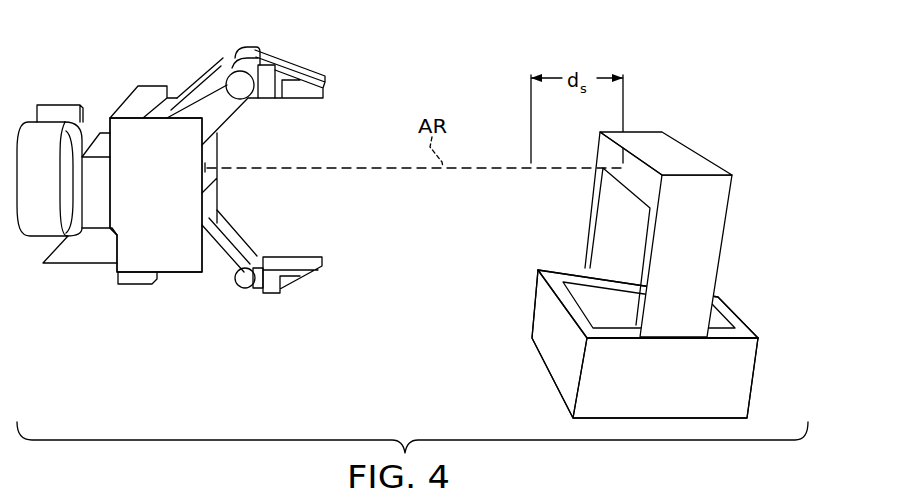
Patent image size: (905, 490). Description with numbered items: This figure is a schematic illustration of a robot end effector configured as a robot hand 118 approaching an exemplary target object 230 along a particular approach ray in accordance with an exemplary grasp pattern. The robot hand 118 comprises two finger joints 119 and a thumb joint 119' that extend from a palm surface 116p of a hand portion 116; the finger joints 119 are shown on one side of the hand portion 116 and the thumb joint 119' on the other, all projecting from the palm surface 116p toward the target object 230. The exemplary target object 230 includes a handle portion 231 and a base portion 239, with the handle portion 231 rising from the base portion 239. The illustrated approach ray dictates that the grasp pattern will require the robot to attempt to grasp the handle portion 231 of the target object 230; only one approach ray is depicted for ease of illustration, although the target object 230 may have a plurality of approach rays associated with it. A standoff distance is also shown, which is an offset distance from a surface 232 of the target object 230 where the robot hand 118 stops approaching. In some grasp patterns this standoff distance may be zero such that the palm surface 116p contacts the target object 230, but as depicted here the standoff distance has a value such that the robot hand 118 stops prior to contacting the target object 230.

The robot hand 118 is at (106, 100).
The hand portion 116 is at (182, 274).
The palm surface 116p is at (210, 203).
The finger joints 119 is at (246, 79).
The thumb joint 119' is at (262, 277).
The target object 230 is at (732, 148).
The handle portion 231 is at (673, 147).
The surface 232 is at (607, 150).
The base portion 239 is at (757, 405).